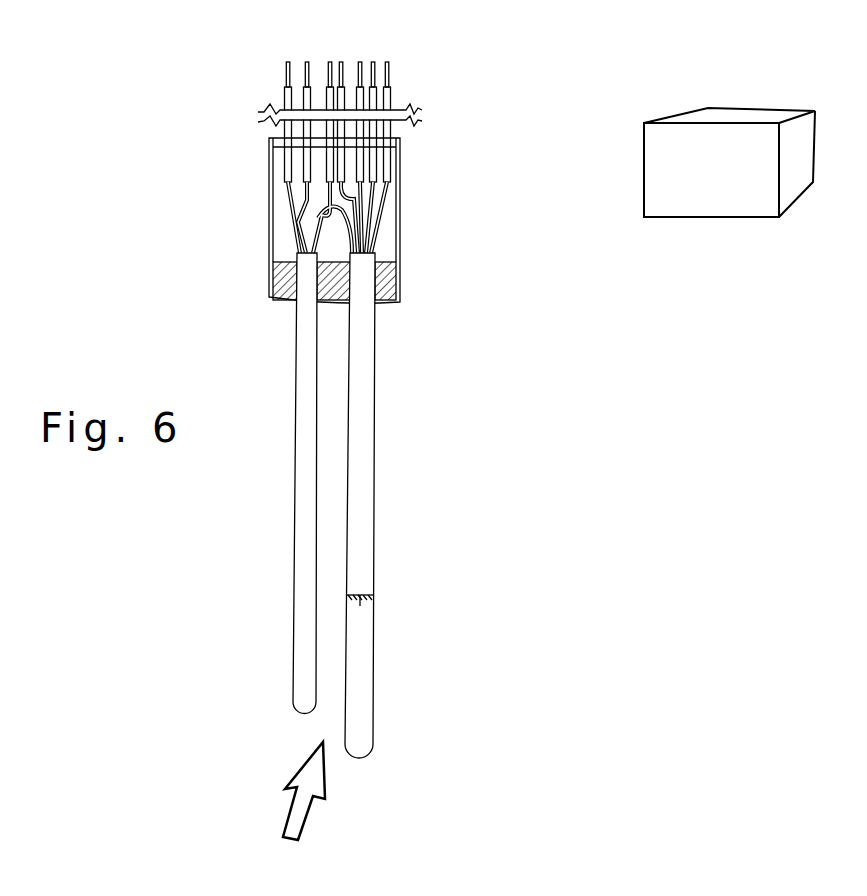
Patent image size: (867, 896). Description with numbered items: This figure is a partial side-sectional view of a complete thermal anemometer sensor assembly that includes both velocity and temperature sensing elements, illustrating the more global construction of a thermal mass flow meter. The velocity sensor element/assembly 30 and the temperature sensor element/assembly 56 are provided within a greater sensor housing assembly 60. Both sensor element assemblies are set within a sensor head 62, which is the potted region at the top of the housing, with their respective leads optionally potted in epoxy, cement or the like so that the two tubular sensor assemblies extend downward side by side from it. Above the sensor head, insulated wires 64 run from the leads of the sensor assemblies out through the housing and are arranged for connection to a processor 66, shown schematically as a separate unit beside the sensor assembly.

The insulated wires 64 is at (422, 85).
The sensor housing assembly 60 is at (223, 313).
The sensor head 62 is at (390, 297).
The temperature sensor element/assembly 56 is at (293, 547).
The velocity sensor element/assembly 30 is at (374, 468).
The processor 66 is at (729, 162).